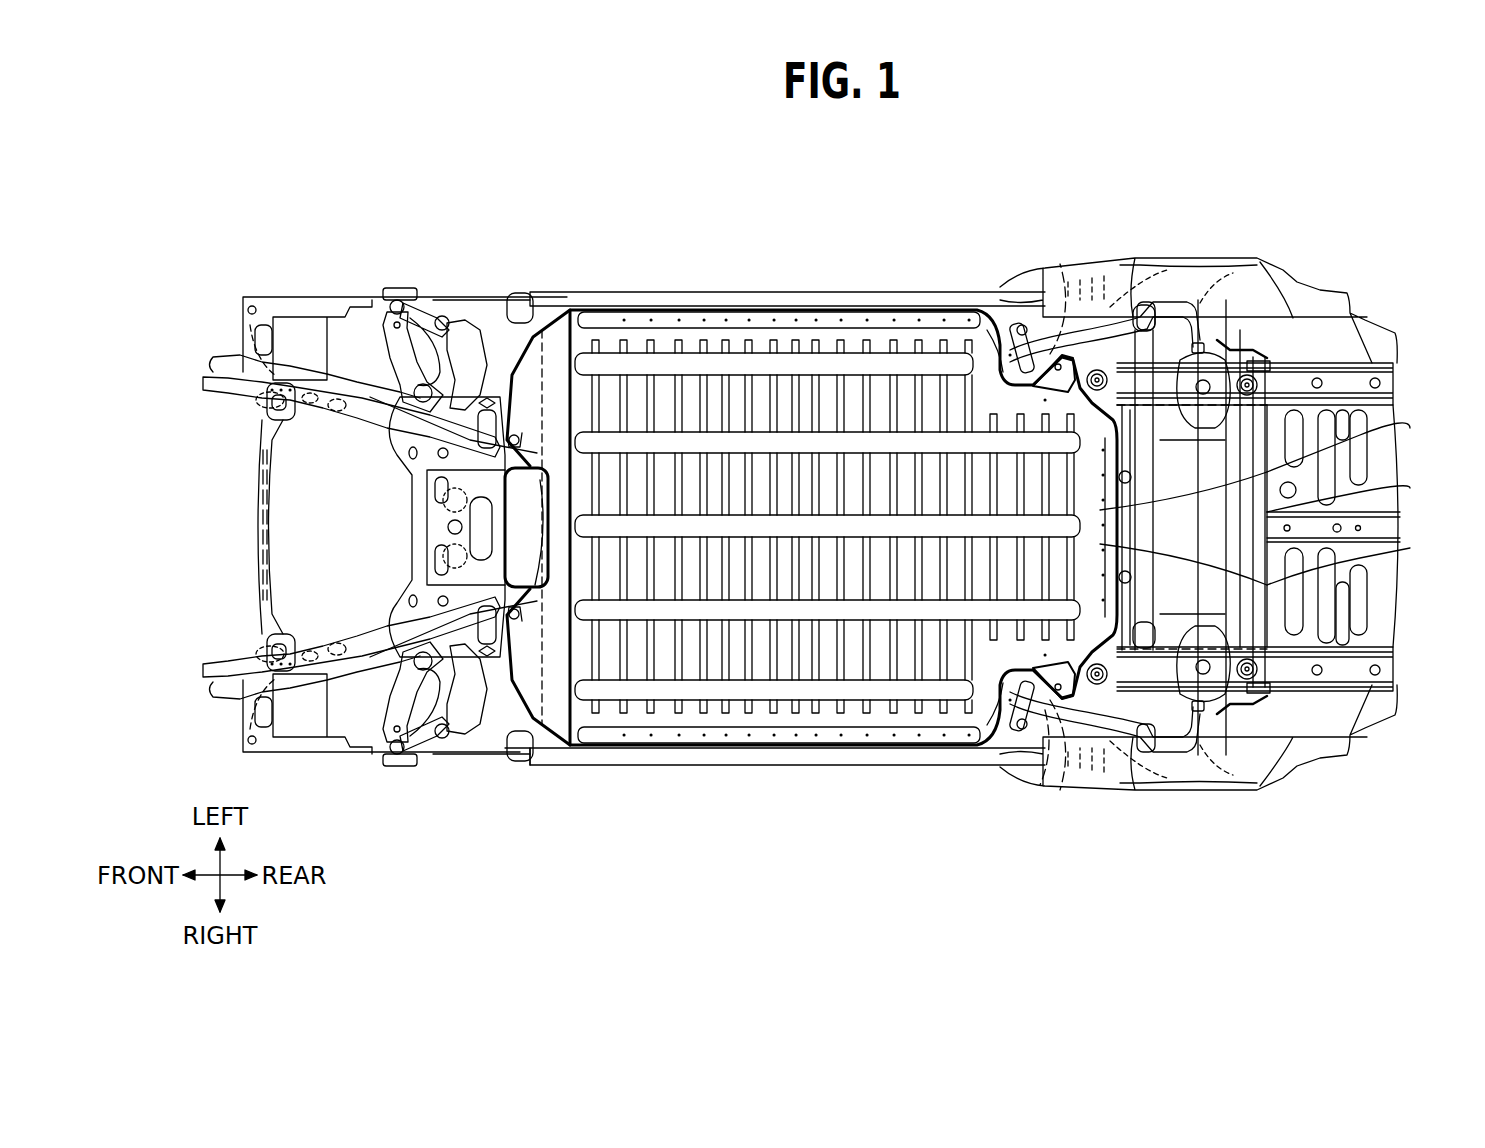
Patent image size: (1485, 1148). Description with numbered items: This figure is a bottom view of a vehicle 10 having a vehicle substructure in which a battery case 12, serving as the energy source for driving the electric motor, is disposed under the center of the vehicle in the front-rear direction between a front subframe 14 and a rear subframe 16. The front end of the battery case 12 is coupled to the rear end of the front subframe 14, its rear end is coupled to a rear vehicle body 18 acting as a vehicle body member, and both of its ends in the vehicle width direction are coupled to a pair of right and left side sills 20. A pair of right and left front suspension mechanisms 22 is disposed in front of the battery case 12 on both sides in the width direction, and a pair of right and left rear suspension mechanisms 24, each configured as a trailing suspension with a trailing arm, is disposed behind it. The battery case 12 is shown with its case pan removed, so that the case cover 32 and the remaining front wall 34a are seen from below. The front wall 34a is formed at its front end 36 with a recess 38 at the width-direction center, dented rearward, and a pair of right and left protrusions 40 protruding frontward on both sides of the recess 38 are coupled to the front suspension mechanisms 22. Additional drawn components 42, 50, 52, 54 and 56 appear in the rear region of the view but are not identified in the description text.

The vehicle 10 is at (1388, 163).
The battery case 12 is at (904, 397).
The front subframe 14 is at (378, 660).
The rear subframe 16 is at (1180, 698).
The rear vehicle body 18 is at (1127, 488).
The side sills 20 is at (770, 291).
The front suspension mechanisms 22 is at (492, 292).
The rear suspension mechanisms 24 is at (1240, 330).
The case cover 32 is at (1115, 192).
The front wall 34a is at (503, 192).
The front end 36 is at (524, 768).
The recess 38 is at (548, 592).
The protrusions 40 is at (528, 385).
The rear cross member 42 is at (1130, 524).
The stabilizer link 50 is at (1020, 735).
The mounting bracket 52 is at (1105, 688).
The lateral link 54 is at (1140, 652).
The rear mounting portion 56 is at (1128, 580).